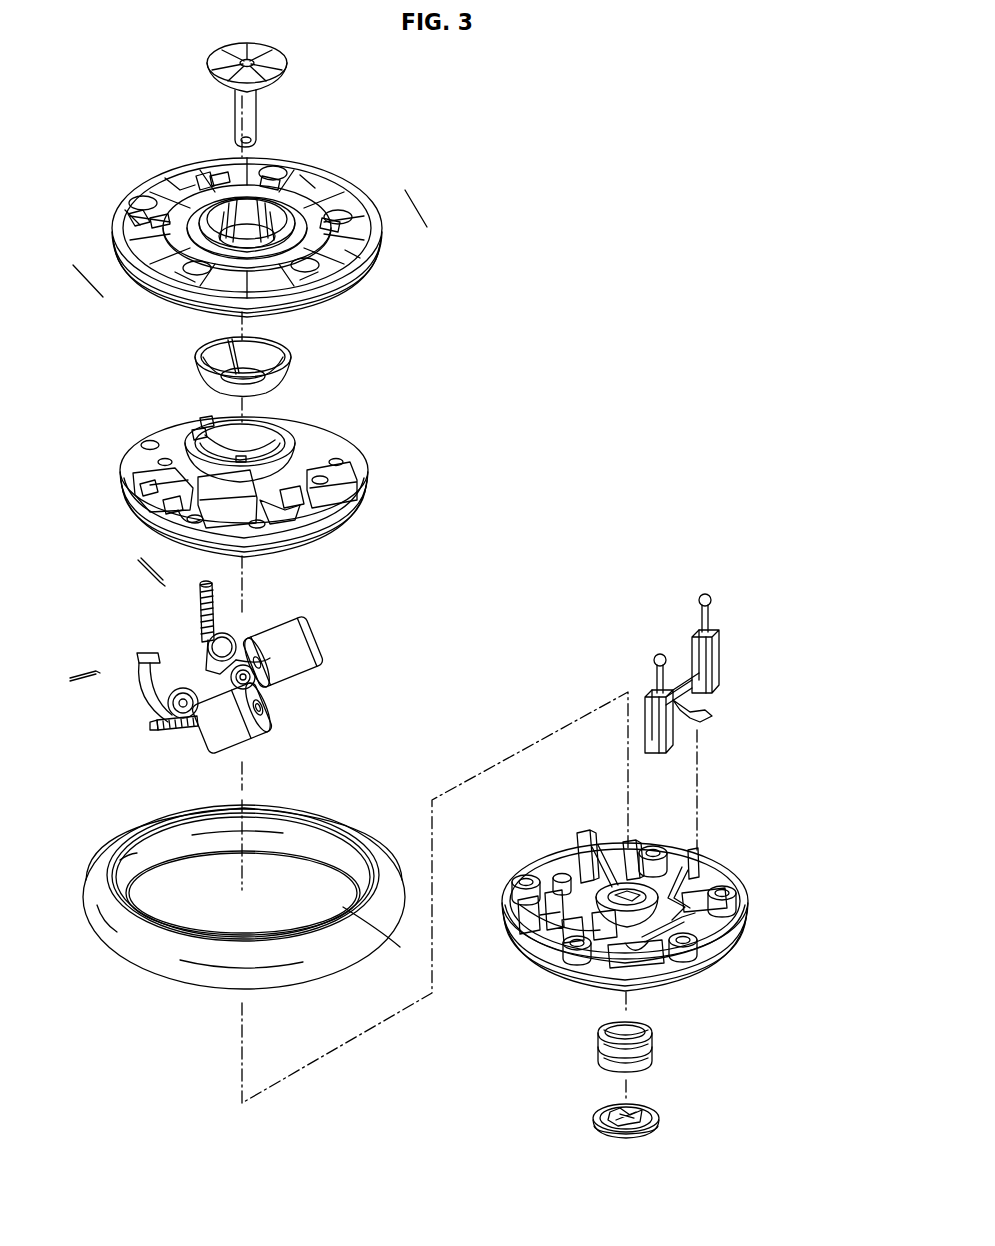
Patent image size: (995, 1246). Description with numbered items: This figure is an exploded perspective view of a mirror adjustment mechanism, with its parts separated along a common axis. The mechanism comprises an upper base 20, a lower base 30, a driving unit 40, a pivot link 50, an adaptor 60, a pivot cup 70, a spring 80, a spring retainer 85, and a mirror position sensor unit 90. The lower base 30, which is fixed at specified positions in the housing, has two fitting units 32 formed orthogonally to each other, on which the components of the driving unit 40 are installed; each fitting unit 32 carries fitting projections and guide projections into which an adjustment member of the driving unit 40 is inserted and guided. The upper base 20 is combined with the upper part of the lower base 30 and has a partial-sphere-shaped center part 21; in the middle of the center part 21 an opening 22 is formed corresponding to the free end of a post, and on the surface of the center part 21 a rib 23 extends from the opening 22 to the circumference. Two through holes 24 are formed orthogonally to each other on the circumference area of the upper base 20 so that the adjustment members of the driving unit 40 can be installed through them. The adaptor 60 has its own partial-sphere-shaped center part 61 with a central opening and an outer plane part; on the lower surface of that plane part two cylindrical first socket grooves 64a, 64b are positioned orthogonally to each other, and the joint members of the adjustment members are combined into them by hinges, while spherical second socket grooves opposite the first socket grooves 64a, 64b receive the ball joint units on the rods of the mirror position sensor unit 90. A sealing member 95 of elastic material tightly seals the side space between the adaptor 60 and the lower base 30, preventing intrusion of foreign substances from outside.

The pivot cup 70 is at (303, 65).
The adaptor 60 is at (262, 209).
The partial sphere shape center part 61 is at (305, 185).
The first socket groove 64a is at (132, 216).
The first socket groove 64b is at (197, 170).
The pivot link 50 is at (315, 352).
The upper base 20 is at (264, 448).
The center part 21 is at (288, 418).
The opening 22 is at (192, 430).
The rib 23 is at (317, 428).
The through holes 24 is at (203, 420).
The driving unit 40 is at (357, 637).
The sealing member 95 is at (157, 955).
The mirror position sensor unit 90 is at (740, 592).
The lower base 30 is at (646, 917).
The fitting unit 32 is at (638, 827).
The spring 80 is at (653, 1047).
The spring retainer 85 is at (658, 1122).